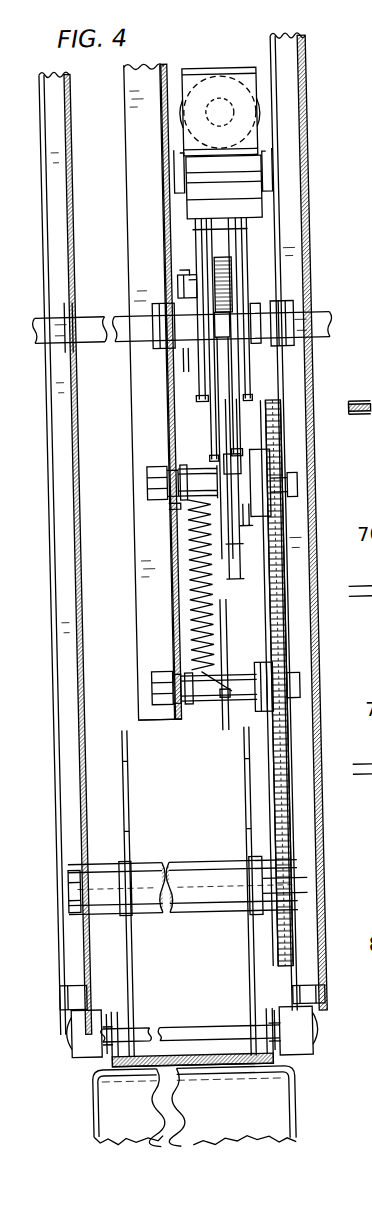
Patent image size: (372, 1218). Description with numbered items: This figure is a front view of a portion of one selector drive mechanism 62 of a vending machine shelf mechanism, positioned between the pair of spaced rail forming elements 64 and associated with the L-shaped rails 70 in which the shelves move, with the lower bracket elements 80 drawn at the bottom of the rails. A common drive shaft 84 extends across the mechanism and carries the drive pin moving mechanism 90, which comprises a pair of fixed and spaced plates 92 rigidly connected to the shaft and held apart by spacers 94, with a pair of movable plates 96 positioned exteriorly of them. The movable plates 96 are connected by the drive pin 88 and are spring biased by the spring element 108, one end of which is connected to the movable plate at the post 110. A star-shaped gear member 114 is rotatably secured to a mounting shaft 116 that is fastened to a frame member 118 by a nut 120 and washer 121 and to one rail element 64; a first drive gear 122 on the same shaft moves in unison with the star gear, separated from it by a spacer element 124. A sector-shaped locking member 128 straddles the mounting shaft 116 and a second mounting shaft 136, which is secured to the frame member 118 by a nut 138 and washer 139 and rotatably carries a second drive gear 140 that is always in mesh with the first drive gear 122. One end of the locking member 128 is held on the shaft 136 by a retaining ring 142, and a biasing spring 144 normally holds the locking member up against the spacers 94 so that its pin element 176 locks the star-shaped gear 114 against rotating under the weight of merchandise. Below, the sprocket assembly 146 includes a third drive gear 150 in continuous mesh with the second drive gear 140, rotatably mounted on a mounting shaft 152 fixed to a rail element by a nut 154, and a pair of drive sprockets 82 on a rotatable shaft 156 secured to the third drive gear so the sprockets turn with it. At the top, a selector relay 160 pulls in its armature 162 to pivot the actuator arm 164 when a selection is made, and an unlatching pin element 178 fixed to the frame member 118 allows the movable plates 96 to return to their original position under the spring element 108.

The selector drive mechanism 62 is at (141, 657).
The spaced rail forming element 64 is at (288, 392).
The L-shaped rail 70 is at (52, 1010).
The roller 80 is at (72, 1054).
The drive sprocket 82 is at (119, 790).
The common drive shaft 84 is at (102, 317).
The drive pin 88 is at (232, 328).
The drive pin moving mechanism 90 is at (211, 247).
The fixed and spaced plates 92 is at (203, 228).
The spacers 94 is at (234, 260).
The movable plates 96 is at (214, 236).
The spring element 108 is at (193, 370).
The post 110 is at (179, 274).
The star-shaped gear member 114 is at (248, 566).
The mounting shaft 116 is at (185, 470).
The frame member 118 is at (148, 534).
The nut 120 is at (159, 473).
The washer 121 is at (171, 507).
The first drive gear 122 is at (296, 489).
The spacer element 124 is at (246, 526).
The sector-shaped locking member 128 is at (226, 640).
The mounting shaft 136 is at (191, 672).
The nut 138 is at (152, 688).
The washer 139 is at (172, 673).
The second drive gear 140 is at (297, 688).
The retaining ring 142 is at (216, 708).
The biasing spring 144 is at (204, 621).
The sprocket assembly 146 is at (192, 1004).
The third drive gear 150 is at (290, 872).
The mounting shaft 152 is at (117, 862).
The nut 154 is at (62, 888).
The rotatable shaft 156 is at (204, 864).
The selector relay 160 is at (193, 105).
The armature 162 is at (254, 69).
The actuator arm 164 is at (204, 202).
The pin element 176 is at (280, 628).
The unlatching pin element 178 is at (184, 280).